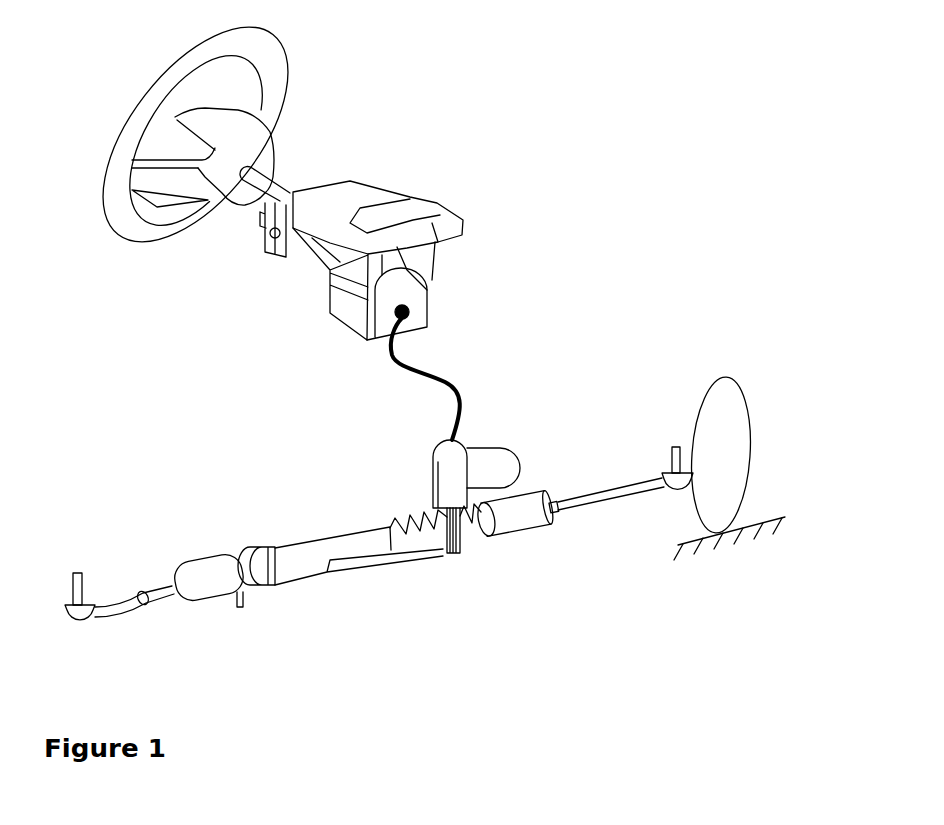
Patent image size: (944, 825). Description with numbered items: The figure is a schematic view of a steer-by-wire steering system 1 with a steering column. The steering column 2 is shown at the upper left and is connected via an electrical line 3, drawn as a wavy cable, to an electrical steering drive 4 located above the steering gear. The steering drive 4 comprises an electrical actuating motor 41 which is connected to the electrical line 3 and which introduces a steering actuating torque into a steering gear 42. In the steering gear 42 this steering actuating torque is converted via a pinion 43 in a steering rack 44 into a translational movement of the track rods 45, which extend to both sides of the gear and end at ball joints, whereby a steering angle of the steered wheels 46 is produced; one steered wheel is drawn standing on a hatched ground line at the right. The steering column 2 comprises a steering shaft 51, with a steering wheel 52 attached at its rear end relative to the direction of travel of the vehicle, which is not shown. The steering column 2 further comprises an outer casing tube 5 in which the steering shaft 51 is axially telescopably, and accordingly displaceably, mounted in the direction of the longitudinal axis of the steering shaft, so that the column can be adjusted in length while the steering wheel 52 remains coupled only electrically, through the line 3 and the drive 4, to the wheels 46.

The steer-by-wire steering system 1 is at (595, 167).
The steering column 2 is at (433, 170).
The electrical line 3 is at (433, 385).
The electrical steering drive 4 is at (452, 463).
The electrical actuating motor 41 is at (510, 472).
The steering gear 42 is at (410, 502).
The pinion 43 is at (460, 555).
The steering rack 44 is at (407, 553).
The track rods 45 is at (143, 600).
The steered wheels 46 is at (733, 442).
The outer casing tube 5 is at (318, 247).
The steering shaft 51 is at (265, 186).
The steering wheel 52 is at (275, 70).